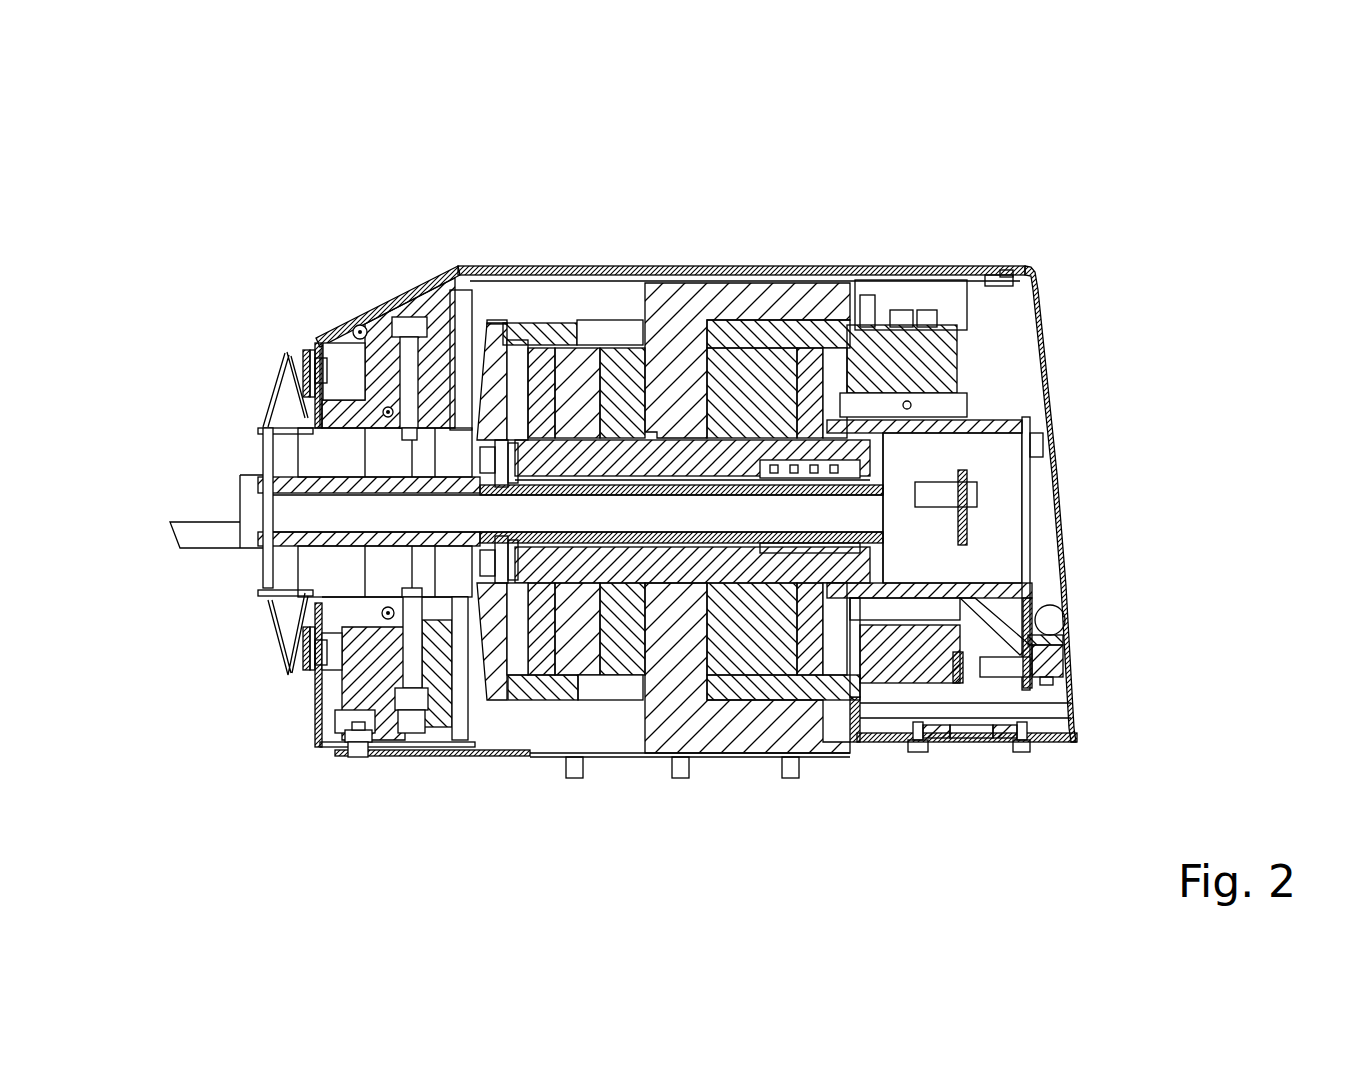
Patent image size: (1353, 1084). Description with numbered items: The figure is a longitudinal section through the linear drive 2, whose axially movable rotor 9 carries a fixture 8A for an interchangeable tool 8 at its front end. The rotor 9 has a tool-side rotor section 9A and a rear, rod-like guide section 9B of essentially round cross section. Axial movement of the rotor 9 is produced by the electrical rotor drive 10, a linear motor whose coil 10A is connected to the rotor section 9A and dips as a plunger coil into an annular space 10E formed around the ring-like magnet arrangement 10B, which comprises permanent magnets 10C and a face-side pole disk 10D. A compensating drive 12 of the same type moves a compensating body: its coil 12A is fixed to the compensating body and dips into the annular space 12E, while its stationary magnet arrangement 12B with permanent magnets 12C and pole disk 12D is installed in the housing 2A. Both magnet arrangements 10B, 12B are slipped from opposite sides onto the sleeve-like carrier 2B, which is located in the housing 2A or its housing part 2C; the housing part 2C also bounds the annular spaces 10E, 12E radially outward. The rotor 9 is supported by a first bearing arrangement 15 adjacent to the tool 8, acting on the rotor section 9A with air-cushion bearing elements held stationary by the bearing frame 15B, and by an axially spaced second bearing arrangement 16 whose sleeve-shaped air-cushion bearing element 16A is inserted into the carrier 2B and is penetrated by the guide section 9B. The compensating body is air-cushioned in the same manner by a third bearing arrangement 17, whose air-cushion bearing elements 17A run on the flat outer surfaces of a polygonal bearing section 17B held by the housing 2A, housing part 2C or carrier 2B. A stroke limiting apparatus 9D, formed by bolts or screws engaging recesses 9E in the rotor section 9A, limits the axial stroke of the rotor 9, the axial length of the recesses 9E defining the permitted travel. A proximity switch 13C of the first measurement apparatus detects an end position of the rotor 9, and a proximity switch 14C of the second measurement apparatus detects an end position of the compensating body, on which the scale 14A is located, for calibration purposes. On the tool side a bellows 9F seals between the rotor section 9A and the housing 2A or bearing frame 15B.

The linear drive 2 is at (352, 232).
The housing 2A is at (667, 248).
The carrier 2B is at (797, 712).
The housing part 2C is at (650, 752).
The tool 8 is at (205, 548).
The fixture 8A is at (268, 480).
The rotor 9 is at (566, 562).
The rotor section 9A is at (270, 445).
The guide section 9B is at (655, 715).
The stroke limiting apparatus 9D is at (365, 338).
The recesses 9E is at (433, 290).
The bellows 9F is at (280, 680).
The rotor drive 10 is at (511, 302).
The coil 10A is at (552, 332).
The magnet arrangement 10B is at (594, 321).
The permanent magnets 10C is at (640, 700).
The pole disk 10D is at (555, 725).
The annular space 10E is at (613, 333).
The compensating drive 12 is at (769, 308).
The coil 12A is at (798, 315).
The magnet arrangement 12B is at (748, 321).
The permanent magnets 12C is at (757, 700).
The pole disk 12D is at (838, 742).
The annular space 12E is at (720, 690).
The proximity switch 13C is at (955, 490).
The scale 14A is at (893, 292).
The proximity switch 14C is at (1002, 668).
The first bearing arrangement 15 is at (287, 402).
The bearing frame 15B is at (390, 684).
The second bearing arrangement 16 is at (700, 315).
The air-cushion bearing element 16A is at (830, 310).
The third bearing arrangement 17 is at (907, 367).
The air-cushion bearing elements 17A is at (948, 412).
The bearing section 17B is at (1005, 425).